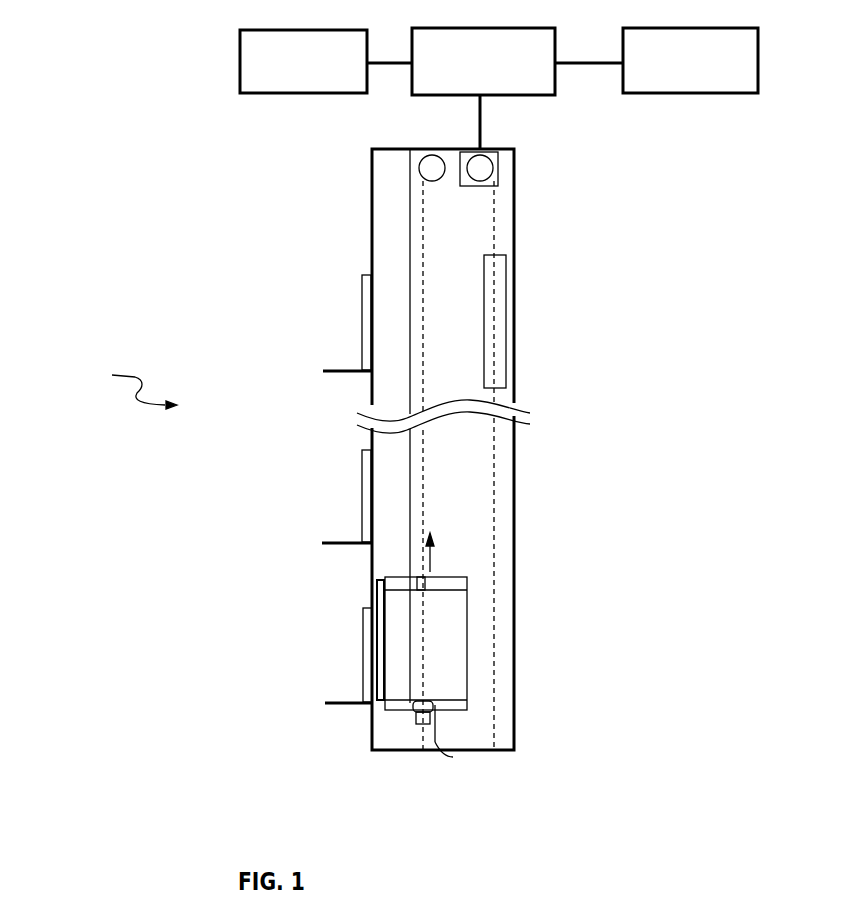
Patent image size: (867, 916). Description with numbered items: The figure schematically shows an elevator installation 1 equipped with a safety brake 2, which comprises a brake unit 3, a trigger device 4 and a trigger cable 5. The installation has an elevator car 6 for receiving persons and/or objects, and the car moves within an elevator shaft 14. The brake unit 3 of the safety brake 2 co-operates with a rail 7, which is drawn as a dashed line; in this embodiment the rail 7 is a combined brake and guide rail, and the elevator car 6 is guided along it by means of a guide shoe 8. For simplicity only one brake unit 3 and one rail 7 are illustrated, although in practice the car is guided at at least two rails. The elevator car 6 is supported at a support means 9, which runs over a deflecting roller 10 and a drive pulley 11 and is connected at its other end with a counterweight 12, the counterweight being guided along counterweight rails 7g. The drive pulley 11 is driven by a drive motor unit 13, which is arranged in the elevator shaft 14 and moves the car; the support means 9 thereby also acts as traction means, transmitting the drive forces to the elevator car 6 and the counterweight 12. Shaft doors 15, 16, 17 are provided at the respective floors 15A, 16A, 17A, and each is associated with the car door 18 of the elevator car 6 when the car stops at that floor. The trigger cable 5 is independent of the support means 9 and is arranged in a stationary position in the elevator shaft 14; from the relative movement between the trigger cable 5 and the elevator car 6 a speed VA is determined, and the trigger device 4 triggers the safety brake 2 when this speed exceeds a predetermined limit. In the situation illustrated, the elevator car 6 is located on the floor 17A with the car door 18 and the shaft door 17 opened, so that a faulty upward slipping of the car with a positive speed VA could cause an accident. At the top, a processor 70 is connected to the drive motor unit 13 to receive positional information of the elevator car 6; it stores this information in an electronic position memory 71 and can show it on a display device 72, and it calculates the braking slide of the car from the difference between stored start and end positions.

The elevator installation 1 is at (134, 387).
The safety brake 2 is at (392, 721).
The brake unit 3 is at (437, 730).
The trigger device 4 is at (415, 718).
The trigger cable 5 is at (453, 757).
The elevator car 6 is at (442, 640).
The rail 7 is at (422, 257).
The counterweight rails 7g is at (502, 448).
The guide shoe 8 is at (425, 582).
The support means 9 is at (418, 214).
The deflecting roller 10 is at (434, 172).
The drive pulley 11 is at (497, 166).
The counterweight 12 is at (502, 290).
The drive motor unit 13 is at (508, 150).
The elevator shaft 14 is at (385, 398).
The shaft door 15 is at (366, 323).
The floor 15A is at (340, 358).
The shaft door 16 is at (363, 497).
The floor 16A is at (350, 535).
The shaft door 17 is at (369, 656).
The floor 17A is at (345, 695).
The car door 18 is at (382, 627).
The speed VA is at (433, 560).
The processor 70 is at (483, 88).
The electronic position memory 71 is at (656, 60).
The display device 72 is at (326, 61).